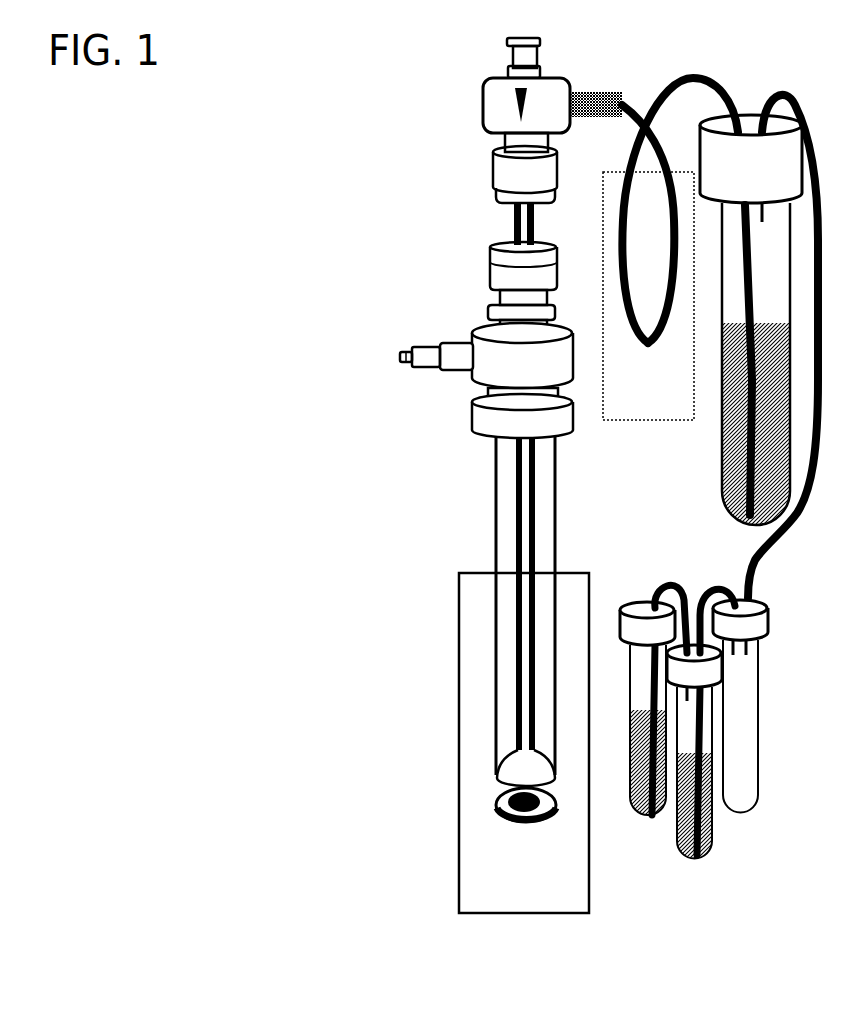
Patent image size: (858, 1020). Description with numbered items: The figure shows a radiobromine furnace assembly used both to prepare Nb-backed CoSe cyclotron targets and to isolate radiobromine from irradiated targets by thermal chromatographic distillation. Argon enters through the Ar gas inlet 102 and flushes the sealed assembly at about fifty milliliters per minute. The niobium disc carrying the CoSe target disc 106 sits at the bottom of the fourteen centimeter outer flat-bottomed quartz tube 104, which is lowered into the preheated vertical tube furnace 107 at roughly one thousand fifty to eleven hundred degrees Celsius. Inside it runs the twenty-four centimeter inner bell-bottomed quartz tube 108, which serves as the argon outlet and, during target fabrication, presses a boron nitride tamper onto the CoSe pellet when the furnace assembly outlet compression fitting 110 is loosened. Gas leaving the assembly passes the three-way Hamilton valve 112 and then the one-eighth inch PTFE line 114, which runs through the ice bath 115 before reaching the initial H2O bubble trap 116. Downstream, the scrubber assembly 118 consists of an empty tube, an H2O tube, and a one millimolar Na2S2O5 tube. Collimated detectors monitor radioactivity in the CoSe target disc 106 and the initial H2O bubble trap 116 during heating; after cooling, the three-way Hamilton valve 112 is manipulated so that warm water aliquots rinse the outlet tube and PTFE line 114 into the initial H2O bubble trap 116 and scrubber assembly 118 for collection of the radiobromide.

The Ar gas inlet 102 is at (383, 360).
The outer flat-bottomed quartz tube 104 is at (489, 689).
The CoSe target disc 106 is at (488, 808).
The vertical tube furnace 107 is at (548, 884).
The inner bell-bottomed quartz tube 108 is at (503, 223).
The furnace assembly outlet compression fitting 110 is at (488, 271).
The 3-way Hamilton valve 112 is at (478, 103).
The PTFE line 114 is at (662, 75).
The ice bath 115 is at (666, 386).
The initial H2O bubble trap 116 is at (750, 107).
The scrubber assembly 118 is at (693, 597).